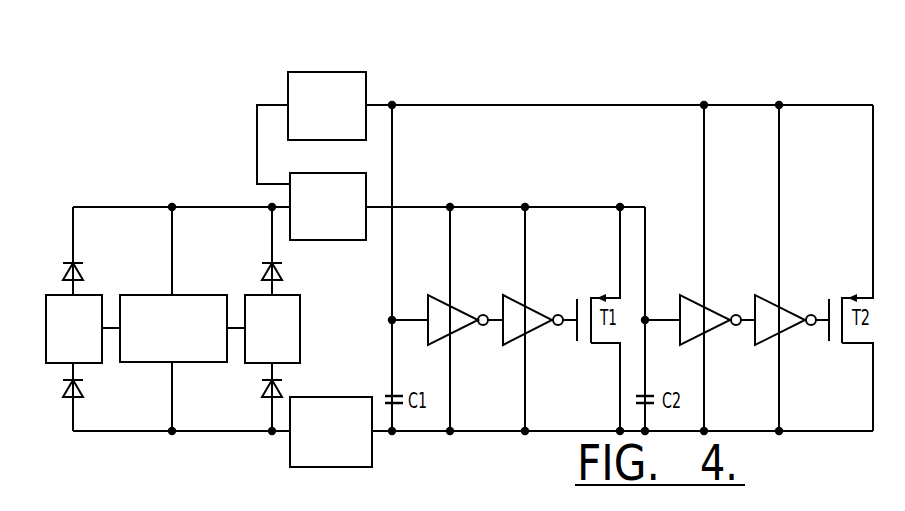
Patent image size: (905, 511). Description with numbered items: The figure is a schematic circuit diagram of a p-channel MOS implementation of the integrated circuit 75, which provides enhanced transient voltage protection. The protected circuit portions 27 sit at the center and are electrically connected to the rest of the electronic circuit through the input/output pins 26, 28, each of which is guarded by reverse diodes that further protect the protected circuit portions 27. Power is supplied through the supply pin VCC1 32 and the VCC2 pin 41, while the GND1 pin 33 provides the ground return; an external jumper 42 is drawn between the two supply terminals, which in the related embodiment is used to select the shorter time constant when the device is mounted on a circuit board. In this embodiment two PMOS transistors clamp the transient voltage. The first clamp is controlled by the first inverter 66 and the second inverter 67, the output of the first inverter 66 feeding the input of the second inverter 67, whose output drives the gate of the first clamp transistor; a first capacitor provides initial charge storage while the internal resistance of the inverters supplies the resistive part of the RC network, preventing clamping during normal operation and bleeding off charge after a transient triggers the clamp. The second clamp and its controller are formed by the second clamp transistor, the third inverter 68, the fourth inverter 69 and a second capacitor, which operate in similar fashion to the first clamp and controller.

The integrated circuit 75 is at (550, 70).
The VCC2 pin 41 is at (288, 92).
The external jumper 42 is at (257, 145).
The supply pin VCC1 32 is at (310, 240).
The GND1 pin 33 is at (328, 397).
The input/output pin 28 is at (88, 296).
The protected circuit portions 27 is at (182, 295).
The input/output pin 26 is at (248, 363).
The first inverter 66 is at (430, 346).
The second inverter 67 is at (505, 346).
The third inverter 68 is at (683, 346).
The fourth inverter 69 is at (757, 346).